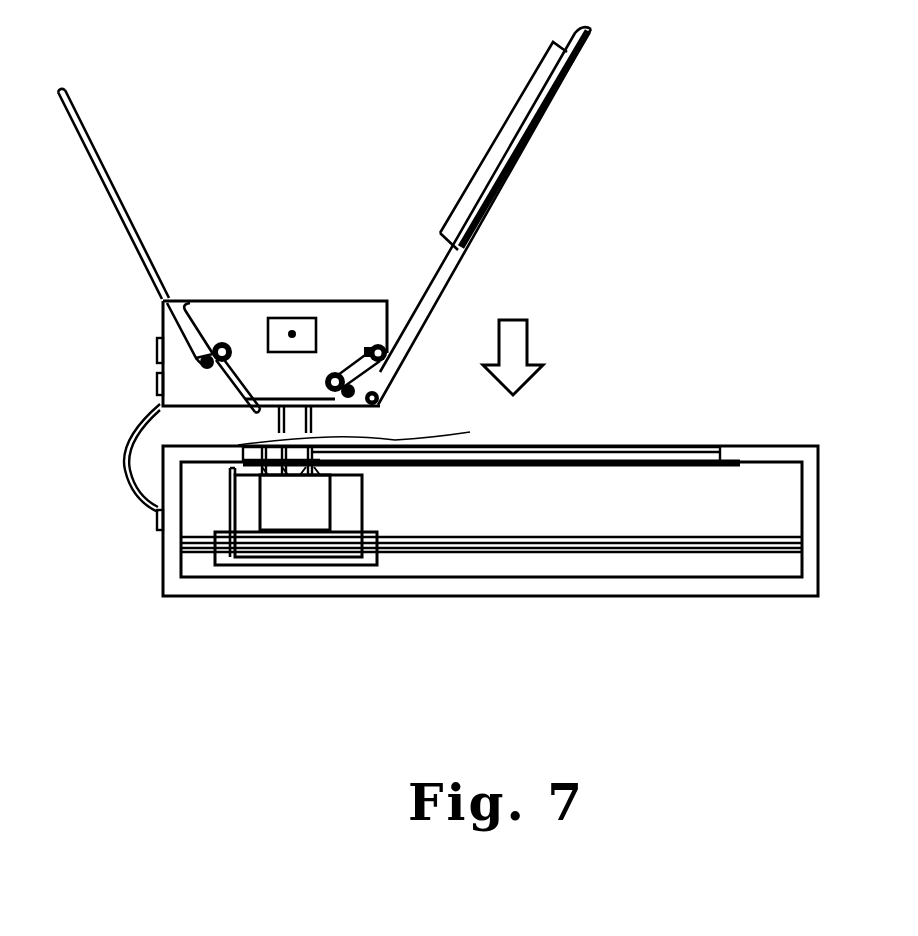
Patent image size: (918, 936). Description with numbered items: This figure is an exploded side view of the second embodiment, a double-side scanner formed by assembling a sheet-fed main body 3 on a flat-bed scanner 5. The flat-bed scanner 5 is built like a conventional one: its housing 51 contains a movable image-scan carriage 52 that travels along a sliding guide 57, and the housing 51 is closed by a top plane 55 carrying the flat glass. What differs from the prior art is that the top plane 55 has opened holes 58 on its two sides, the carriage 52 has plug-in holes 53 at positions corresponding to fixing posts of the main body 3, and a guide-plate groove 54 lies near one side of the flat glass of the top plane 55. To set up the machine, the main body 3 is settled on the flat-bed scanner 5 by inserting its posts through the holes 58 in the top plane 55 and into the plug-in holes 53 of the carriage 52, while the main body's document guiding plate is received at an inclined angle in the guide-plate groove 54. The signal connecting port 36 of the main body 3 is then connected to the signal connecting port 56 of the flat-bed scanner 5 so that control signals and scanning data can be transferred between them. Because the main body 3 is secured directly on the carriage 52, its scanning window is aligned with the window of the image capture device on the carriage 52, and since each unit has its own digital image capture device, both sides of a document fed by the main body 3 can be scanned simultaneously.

The main body 3 is at (303, 291).
The signal connecting port 36 is at (157, 383).
The flat-bed scanner 5 is at (587, 605).
The scanner's housing 51 is at (760, 497).
The movable carriage 52 is at (295, 522).
The plug-in holes 53 is at (320, 478).
The guide-plate groove 54 is at (243, 447).
The top plane 55 is at (525, 443).
The signal connecting port 56 is at (157, 530).
The sliding guide 57 is at (693, 545).
The holes 58 is at (317, 450).